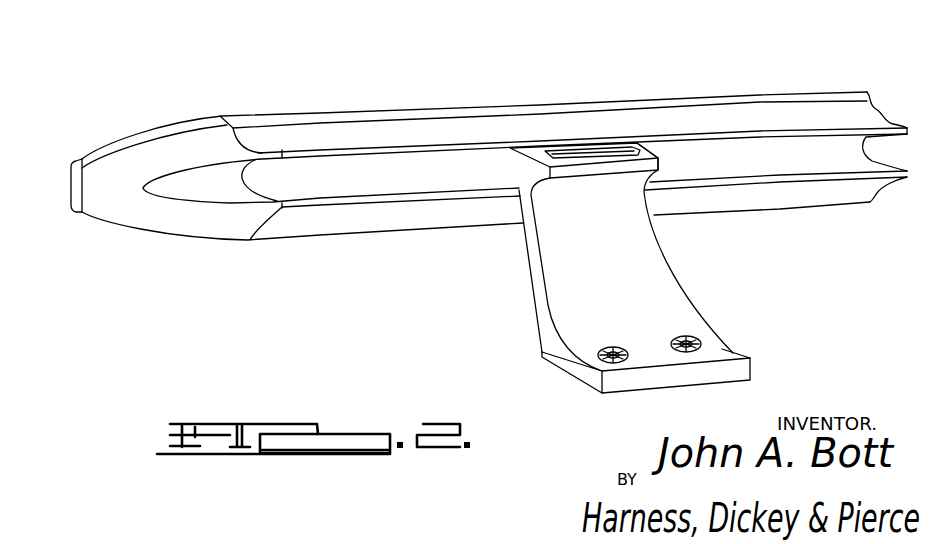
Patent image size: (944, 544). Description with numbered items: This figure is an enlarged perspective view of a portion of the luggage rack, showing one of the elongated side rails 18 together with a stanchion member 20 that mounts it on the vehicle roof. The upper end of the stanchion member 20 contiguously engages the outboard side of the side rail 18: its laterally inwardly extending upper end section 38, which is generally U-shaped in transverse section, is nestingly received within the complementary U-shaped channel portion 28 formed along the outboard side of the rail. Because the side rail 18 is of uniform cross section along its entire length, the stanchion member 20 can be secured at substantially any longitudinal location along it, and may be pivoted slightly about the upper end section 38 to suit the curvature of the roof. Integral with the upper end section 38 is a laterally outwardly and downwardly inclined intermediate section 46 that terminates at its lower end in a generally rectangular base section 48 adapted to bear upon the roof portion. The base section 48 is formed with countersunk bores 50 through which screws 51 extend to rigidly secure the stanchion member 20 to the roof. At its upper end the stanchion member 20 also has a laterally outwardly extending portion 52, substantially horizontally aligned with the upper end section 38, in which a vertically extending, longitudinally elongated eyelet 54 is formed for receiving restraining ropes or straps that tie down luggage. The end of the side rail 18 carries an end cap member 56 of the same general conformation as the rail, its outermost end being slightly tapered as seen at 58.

The side rail 18 is at (391, 106).
The stanchion member 20 is at (620, 237).
The U-shaped channel portion 28 is at (800, 140).
The upper end section 38 is at (601, 113).
The intermediate section 46 is at (650, 250).
The base section 48 is at (726, 352).
The countersunk bore 50 is at (691, 353).
The screw 51 is at (676, 342).
The laterally outwardly extending portion 52 is at (658, 157).
The eyelet 54 is at (589, 160).
The end cap member 56 is at (165, 122).
The tapered end 58 is at (110, 197).